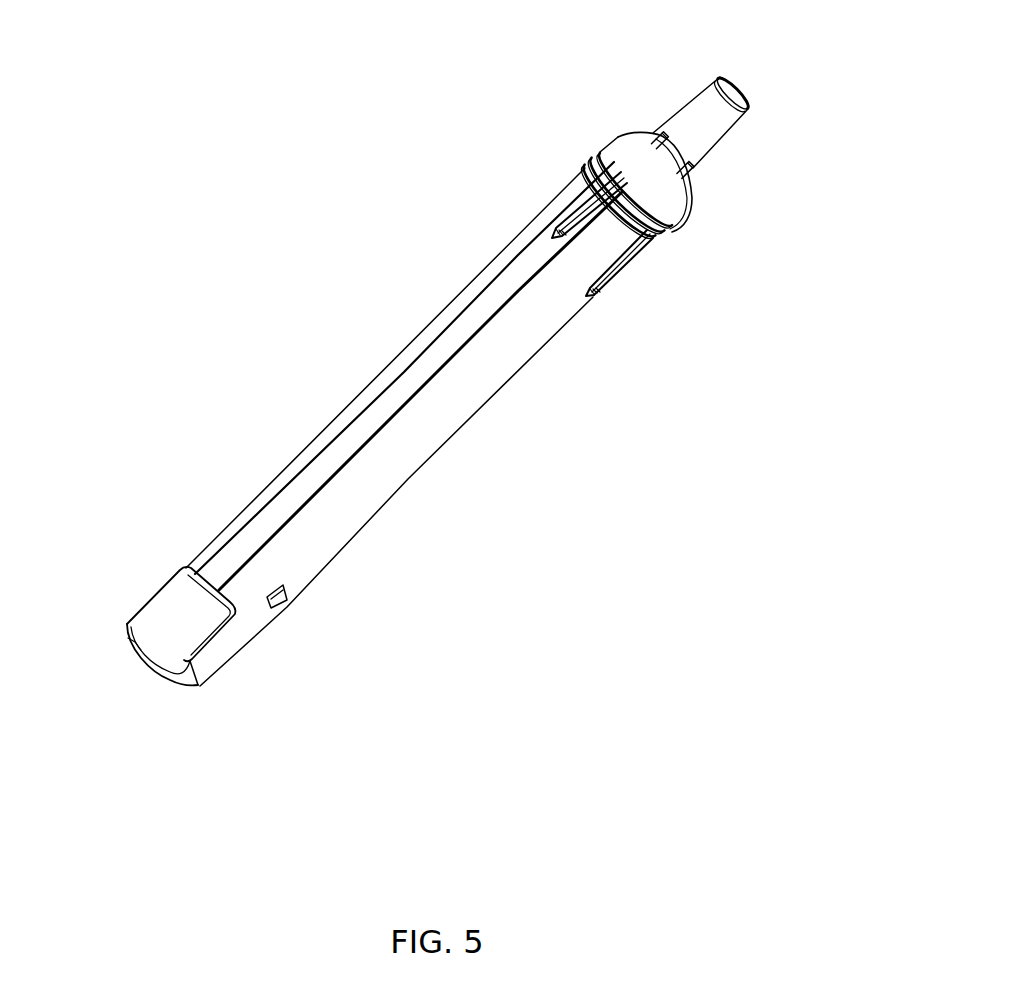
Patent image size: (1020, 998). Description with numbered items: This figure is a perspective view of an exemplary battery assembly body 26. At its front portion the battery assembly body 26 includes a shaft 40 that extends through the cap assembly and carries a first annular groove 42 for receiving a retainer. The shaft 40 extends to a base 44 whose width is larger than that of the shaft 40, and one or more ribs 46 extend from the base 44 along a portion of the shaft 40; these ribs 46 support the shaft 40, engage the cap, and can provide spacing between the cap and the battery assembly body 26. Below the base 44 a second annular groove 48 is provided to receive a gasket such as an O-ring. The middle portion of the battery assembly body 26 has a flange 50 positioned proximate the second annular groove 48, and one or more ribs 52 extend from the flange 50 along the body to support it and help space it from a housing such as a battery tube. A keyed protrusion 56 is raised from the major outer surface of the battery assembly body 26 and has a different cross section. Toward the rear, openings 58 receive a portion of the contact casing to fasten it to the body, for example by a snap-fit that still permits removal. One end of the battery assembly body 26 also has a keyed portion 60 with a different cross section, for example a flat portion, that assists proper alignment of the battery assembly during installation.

The battery assembly body 26 is at (373, 306).
The shaft 40 is at (700, 100).
The first annular groove 42 is at (748, 109).
The base 44 is at (617, 137).
The ribs 46 is at (697, 181).
The second annular groove 48 is at (598, 157).
The flange 50 is at (663, 236).
The ribs 52 is at (648, 246).
The keyed protrusion 56 is at (497, 283).
The openings 58 is at (288, 603).
The keyed portion 60 is at (160, 590).